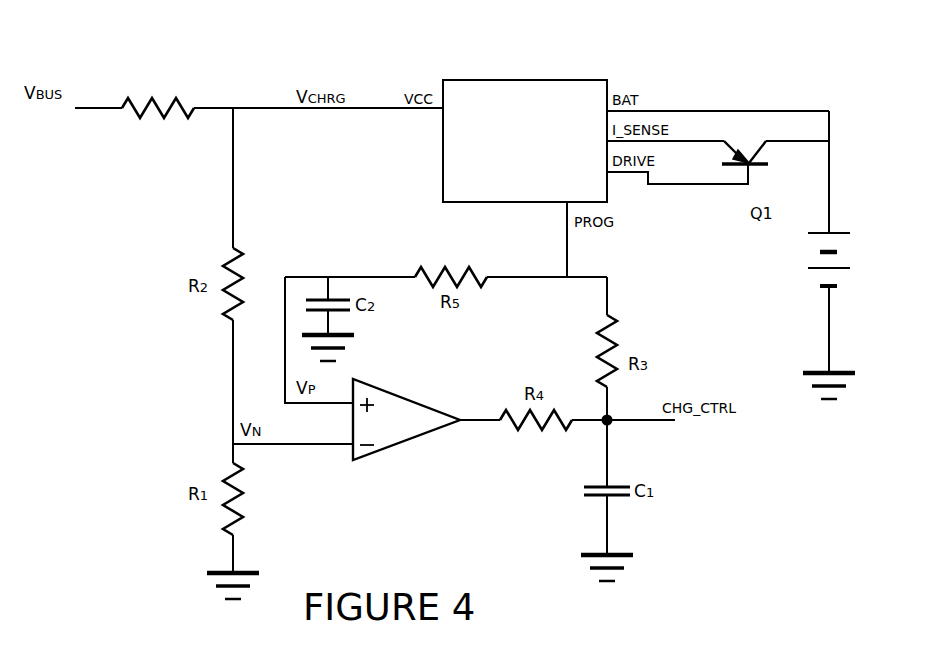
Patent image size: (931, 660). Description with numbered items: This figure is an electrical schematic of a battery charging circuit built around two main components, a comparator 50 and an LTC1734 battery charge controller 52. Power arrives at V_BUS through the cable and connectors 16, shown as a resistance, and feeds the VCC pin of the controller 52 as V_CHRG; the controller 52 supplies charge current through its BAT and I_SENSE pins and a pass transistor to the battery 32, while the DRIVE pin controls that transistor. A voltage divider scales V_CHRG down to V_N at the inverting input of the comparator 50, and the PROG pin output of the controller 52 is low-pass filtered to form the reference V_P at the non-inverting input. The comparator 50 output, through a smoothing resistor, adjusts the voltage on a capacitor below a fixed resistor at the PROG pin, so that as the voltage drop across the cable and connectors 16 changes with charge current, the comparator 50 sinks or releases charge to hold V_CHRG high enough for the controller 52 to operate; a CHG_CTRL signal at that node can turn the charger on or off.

The cable and connectors 16 is at (152, 63).
The LTC1734 battery charge controller 52 is at (597, 80).
The battery 32 is at (806, 255).
The comparator 50 is at (407, 439).